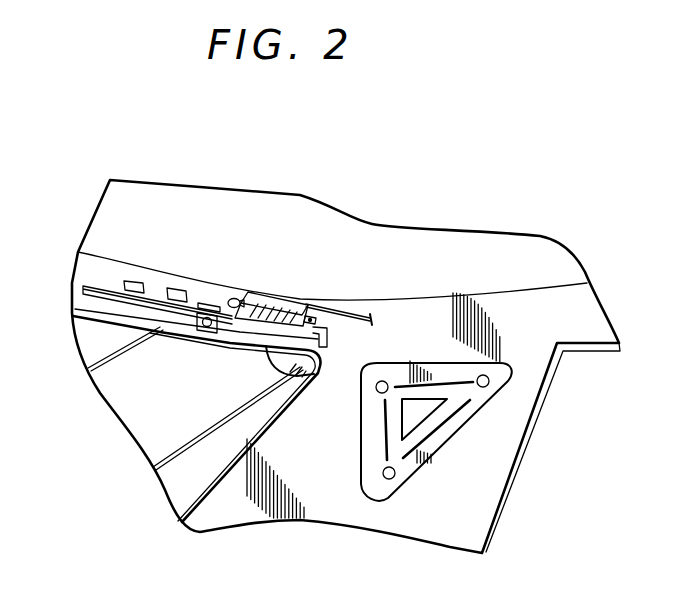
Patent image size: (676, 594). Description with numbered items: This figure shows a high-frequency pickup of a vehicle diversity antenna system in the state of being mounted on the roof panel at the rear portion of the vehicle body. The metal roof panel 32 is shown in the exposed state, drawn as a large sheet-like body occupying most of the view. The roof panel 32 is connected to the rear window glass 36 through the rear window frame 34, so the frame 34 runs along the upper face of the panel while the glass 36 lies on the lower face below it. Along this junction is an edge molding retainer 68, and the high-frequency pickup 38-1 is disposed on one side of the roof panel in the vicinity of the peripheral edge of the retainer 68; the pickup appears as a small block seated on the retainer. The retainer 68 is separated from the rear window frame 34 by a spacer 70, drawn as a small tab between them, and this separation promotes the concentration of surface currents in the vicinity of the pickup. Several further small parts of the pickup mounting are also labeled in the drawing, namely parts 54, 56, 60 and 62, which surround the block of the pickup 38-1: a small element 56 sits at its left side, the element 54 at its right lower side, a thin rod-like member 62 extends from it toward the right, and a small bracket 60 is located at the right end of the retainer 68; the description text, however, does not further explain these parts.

The roof panel 32 is at (117, 218).
The rear window frame 34 is at (93, 271).
The rear window glass 36 is at (123, 389).
The high-frequency pickup 38-1 is at (282, 311).
The fastener 54 is at (311, 316).
The button 56 is at (236, 299).
The bracket 60 is at (326, 345).
The rod 62 is at (353, 314).
The edge molding retainer 68 is at (304, 378).
The spacer 70 is at (207, 302).